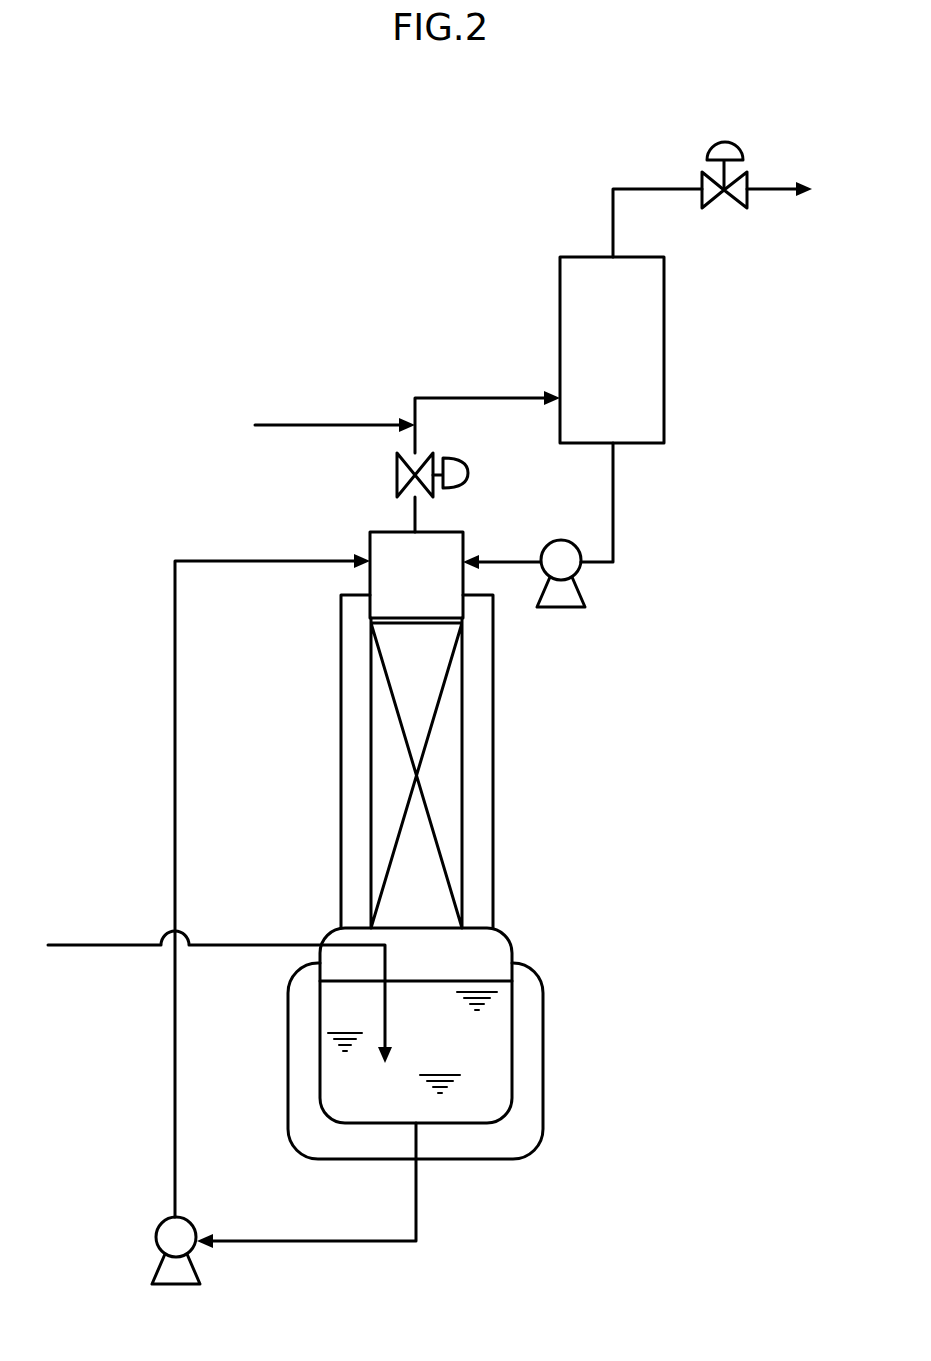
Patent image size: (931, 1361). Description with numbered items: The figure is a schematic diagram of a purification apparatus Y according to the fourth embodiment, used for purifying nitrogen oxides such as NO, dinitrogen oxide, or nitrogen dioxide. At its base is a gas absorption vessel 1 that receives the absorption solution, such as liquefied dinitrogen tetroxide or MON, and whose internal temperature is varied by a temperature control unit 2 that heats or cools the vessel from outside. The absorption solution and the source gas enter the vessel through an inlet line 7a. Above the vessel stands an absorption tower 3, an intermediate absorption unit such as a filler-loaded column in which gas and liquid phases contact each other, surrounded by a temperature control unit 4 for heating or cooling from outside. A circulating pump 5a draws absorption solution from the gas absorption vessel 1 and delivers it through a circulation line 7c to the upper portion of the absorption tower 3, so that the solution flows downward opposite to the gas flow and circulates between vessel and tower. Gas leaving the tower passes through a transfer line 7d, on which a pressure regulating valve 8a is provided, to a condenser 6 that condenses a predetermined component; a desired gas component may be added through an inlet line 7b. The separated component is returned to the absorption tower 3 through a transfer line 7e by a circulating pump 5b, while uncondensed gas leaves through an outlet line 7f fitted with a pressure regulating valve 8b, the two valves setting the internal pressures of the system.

The purification apparatus Y is at (196, 290).
The gas absorption vessel 1 is at (505, 932).
The temperature control unit 2 is at (543, 1027).
The absorption tower 3 is at (462, 668).
The temperature control unit 4 is at (493, 772).
The circulating pump 5a is at (156, 1240).
The circulating pump 5b is at (582, 595).
The condenser 6 is at (664, 337).
The inlet line 7a is at (90, 945).
The inlet line 7b is at (315, 428).
The circulation line 7c is at (175, 702).
The transfer line 7d is at (480, 397).
The transfer line 7e is at (615, 518).
The outlet line 7f is at (650, 189).
The pressure regulating valve 8a is at (397, 477).
The pressure regulating valve 8b is at (740, 147).